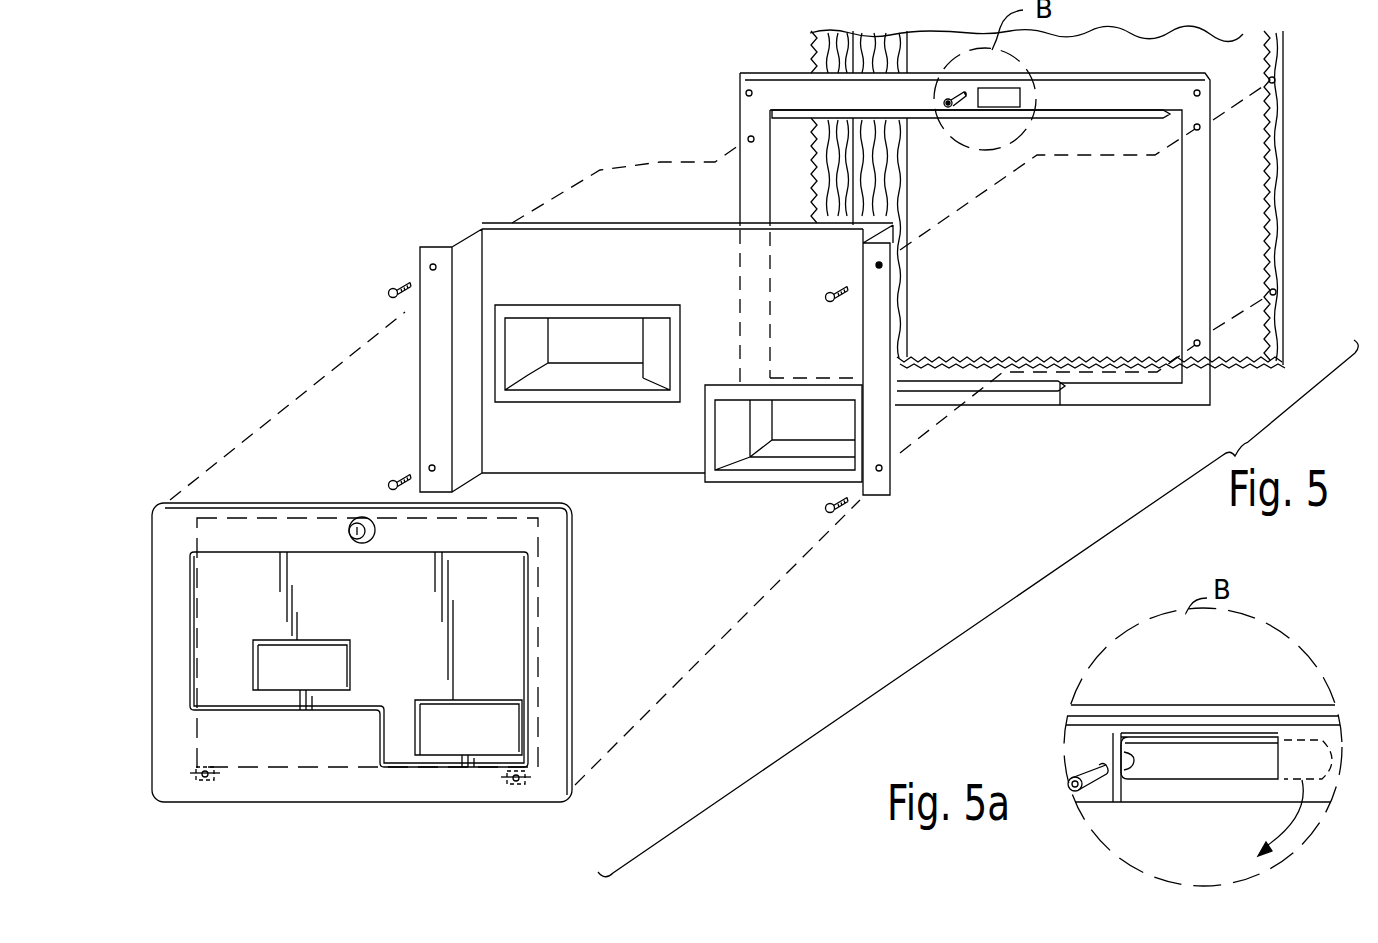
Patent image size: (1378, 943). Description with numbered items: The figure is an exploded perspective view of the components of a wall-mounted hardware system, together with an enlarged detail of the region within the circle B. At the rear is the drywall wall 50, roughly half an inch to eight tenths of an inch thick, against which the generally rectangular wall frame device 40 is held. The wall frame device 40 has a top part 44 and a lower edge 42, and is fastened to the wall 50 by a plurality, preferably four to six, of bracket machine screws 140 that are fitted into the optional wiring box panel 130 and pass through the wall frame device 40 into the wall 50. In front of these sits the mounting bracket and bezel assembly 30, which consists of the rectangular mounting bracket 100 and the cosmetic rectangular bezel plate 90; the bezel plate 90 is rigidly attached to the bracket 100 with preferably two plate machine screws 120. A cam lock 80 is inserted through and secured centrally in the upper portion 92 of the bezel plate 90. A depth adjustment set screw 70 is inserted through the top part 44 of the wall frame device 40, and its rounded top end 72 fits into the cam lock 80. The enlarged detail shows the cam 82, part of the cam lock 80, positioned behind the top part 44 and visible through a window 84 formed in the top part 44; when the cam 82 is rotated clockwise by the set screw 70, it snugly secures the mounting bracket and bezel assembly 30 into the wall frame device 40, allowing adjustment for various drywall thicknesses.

In FIG. 5, the mounting bracket and bezel assembly 30 is at (150, 717).
In FIG. 5, the wall frame device 40 is at (738, 75).
In FIG. 5, the lower edge 42 is at (1098, 387).
In FIG. 5, the top part 44 is at (1073, 98).
In FIG. 5A, the top part 44 is at (1097, 745).
In FIG. 5, the wall 50 is at (810, 52).
In FIG. 5, the depth adjustment set screw 70 is at (954, 106).
In FIG. 5A, the depth adjustment set screw 70 is at (1090, 784).
In FIG. 5, the rounded top end 72 is at (946, 108).
In FIG. 5, the cam lock 80 is at (356, 544).
In FIG. 5A, the cam 82 is at (1236, 755).
In FIG. 5A, the window 84 is at (1182, 738).
In FIG. 5, the bezel plate 90 is at (160, 600).
In FIG. 5, the upper portion 92 is at (264, 520).
In FIG. 5, the mounting bracket 100 is at (442, 655).
In FIG. 5, the plate machine screws 120 is at (198, 782).
In FIG. 5, the wiring box panel 130 is at (430, 242).
In FIG. 5, the bracket machine screws 140 is at (392, 288).